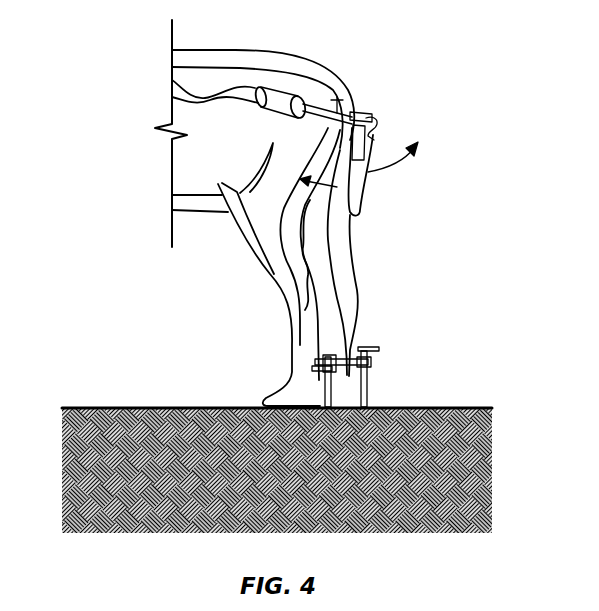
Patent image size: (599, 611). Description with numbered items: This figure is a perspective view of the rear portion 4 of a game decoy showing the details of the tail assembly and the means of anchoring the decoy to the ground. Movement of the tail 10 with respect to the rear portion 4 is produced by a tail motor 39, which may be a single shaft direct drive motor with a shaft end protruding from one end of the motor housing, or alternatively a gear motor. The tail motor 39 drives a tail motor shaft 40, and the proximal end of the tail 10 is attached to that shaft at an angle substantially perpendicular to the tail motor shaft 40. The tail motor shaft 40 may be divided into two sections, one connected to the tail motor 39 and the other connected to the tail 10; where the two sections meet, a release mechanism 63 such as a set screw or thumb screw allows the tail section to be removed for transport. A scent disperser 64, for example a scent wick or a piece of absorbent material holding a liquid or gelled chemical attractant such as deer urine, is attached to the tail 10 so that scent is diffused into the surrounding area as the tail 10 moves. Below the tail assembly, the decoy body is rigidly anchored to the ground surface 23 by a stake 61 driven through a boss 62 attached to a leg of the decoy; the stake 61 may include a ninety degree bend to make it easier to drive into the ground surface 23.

The rear portion 4 is at (215, 50).
The tail motor 39 is at (278, 86).
The tail motor shaft 40 is at (322, 95).
The release mechanism 63 is at (343, 98).
The tail 10 is at (365, 127).
The scent disperser 64 is at (375, 142).
The boss 62 is at (372, 361).
The stake 61 is at (368, 391).
The ground surface 23 is at (447, 408).